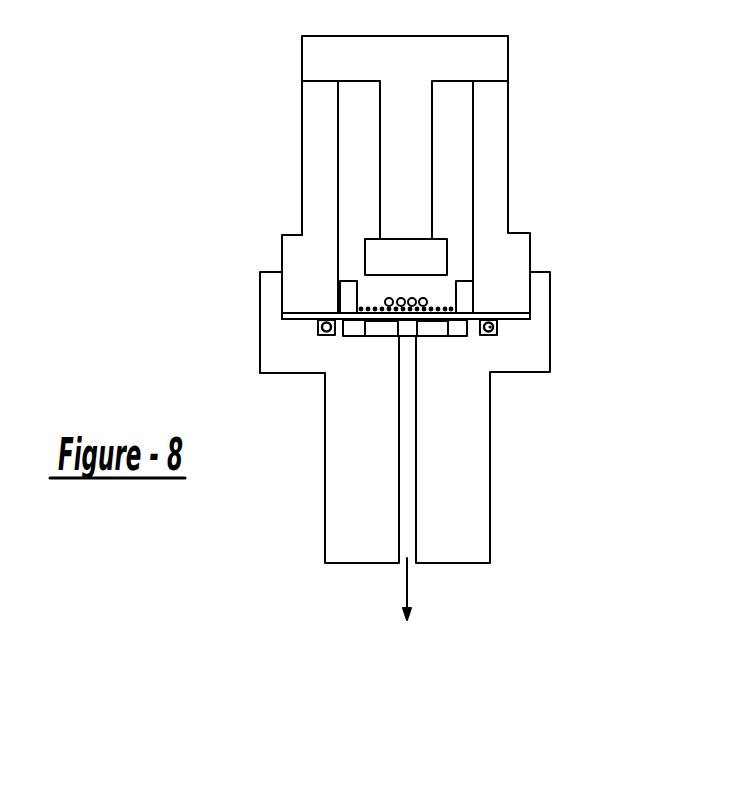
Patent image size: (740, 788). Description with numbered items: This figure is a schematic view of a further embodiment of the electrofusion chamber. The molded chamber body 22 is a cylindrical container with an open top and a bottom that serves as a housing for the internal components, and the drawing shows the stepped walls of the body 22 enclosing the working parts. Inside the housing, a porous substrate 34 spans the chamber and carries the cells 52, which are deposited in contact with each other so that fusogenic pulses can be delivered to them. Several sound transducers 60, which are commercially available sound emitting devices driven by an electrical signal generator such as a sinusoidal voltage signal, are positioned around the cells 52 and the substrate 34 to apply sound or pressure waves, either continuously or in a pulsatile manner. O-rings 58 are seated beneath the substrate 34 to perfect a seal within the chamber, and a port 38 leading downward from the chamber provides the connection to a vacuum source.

The chamber body 22 is at (483, 65).
The porous substrate 34 is at (530, 317).
The cells 52 is at (432, 308).
The sound transducers 60 is at (388, 250).
The O-ring 58 is at (492, 330).
The port 38 is at (416, 563).